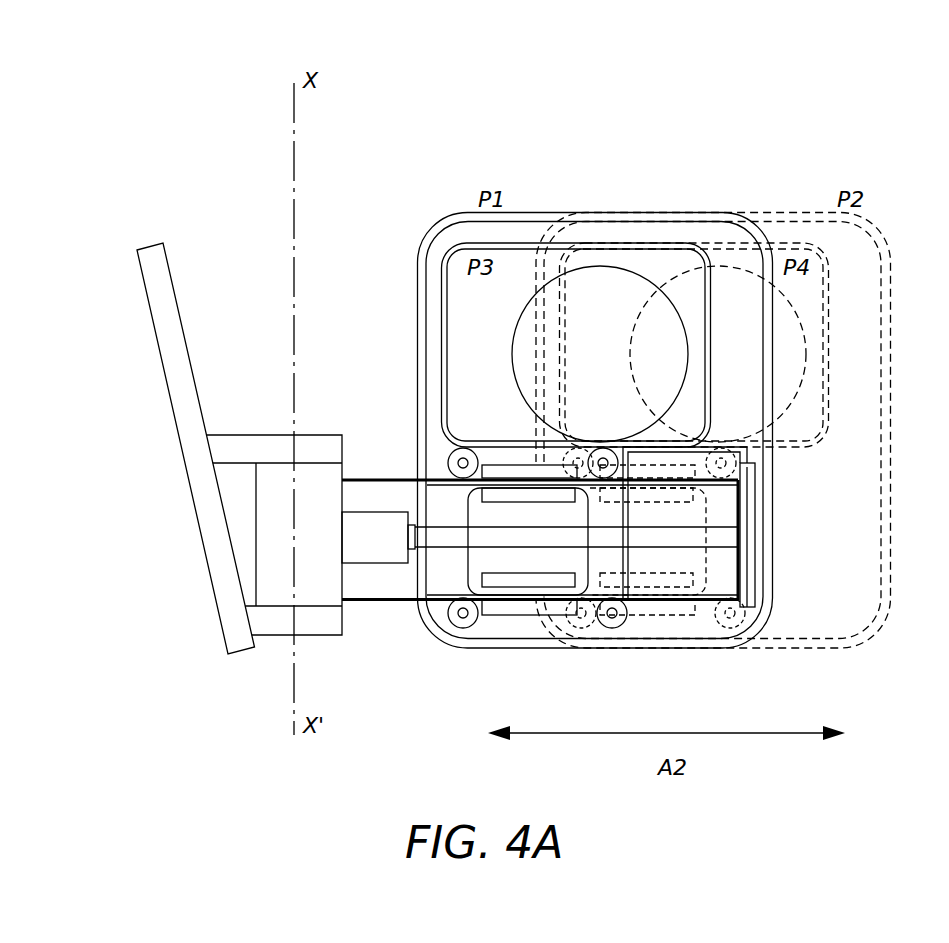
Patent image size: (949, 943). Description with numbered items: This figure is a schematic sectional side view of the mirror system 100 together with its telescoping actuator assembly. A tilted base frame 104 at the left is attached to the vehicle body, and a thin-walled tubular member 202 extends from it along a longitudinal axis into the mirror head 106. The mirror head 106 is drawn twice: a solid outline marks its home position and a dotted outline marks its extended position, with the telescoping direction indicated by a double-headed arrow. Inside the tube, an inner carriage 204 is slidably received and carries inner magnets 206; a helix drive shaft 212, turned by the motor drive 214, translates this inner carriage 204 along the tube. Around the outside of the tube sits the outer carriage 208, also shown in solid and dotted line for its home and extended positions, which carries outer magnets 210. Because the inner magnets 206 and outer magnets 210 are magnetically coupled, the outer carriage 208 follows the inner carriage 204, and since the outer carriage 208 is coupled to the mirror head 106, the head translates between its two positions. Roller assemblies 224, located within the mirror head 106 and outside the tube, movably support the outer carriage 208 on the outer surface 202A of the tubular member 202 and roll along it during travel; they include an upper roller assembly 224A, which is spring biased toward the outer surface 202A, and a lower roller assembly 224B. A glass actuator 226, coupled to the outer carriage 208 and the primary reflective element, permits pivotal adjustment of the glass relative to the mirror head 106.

The mirror system 100 is at (622, 50).
The base frame 104 is at (182, 317).
The mirror head 106 is at (552, 213).
The tubular member 202 is at (353, 625).
The outer surface of the tubular member 202A is at (402, 600).
The inner carriage 204 is at (557, 557).
The inner magnets 206 is at (545, 582).
The outer carriage 208 is at (627, 243).
The outer magnets 210 is at (510, 608).
The helix drive shaft 212 is at (680, 548).
The motor drive 214 is at (370, 535).
The roller assemblies 224 is at (737, 467).
The upper roller assembly 224A is at (453, 447).
The lower roller assembly 224B is at (457, 627).
The glass actuator 226 is at (582, 322).